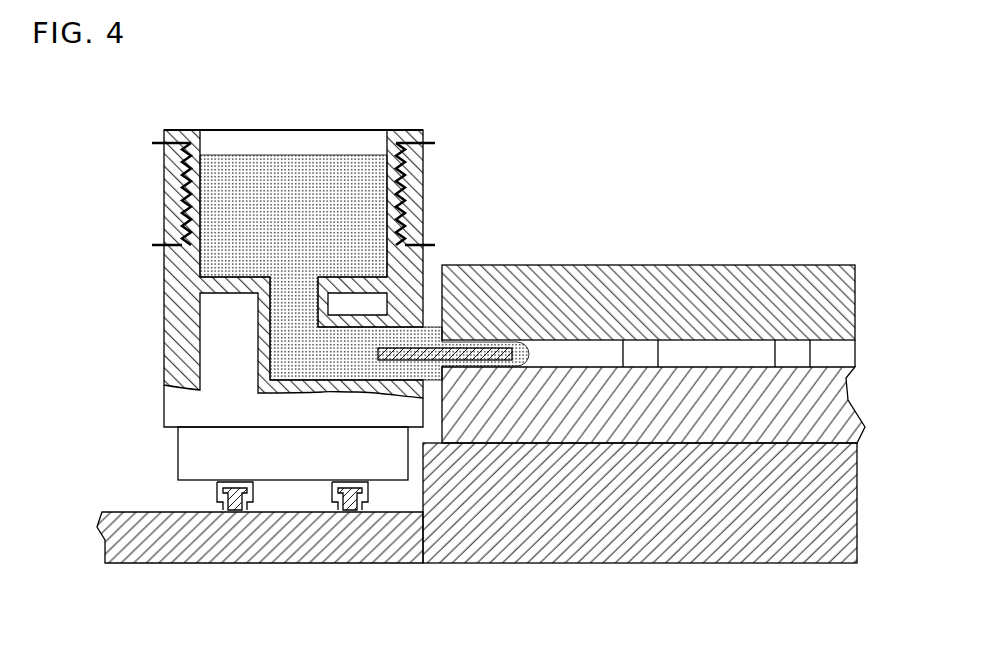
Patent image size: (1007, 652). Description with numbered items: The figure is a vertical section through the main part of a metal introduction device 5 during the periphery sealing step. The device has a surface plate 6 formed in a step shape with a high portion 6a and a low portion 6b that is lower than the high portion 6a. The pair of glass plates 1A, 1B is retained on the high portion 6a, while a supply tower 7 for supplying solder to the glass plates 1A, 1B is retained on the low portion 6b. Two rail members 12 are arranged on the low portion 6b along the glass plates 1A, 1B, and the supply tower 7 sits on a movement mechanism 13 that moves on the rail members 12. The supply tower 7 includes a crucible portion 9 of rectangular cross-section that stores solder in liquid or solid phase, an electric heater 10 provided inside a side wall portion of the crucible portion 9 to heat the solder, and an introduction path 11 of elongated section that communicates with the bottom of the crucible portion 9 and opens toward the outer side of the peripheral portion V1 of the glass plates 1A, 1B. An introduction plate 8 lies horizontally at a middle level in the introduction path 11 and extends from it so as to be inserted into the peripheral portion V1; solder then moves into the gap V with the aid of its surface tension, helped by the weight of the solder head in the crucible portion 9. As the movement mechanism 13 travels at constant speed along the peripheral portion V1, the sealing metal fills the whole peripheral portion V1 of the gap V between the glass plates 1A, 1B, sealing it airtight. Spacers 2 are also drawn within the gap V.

The metal introduction device 5 is at (304, 240).
The supply tower 7 is at (256, 239).
The crucible portion 9 is at (167, 198).
The electric heater 10 is at (269, 187).
The introduction path 11 is at (273, 353).
The introduction plate 8 is at (475, 347).
The movement mechanism 13 is at (161, 488).
The rail members 12 is at (348, 495).
The surface plate 6 is at (461, 532).
The low portion 6b is at (372, 555).
The high portion 6a is at (538, 547).
The glass plate 1A is at (626, 265).
The glass plate 1B is at (727, 420).
The spacers 2 is at (782, 347).
The gap V is at (827, 343).
The peripheral portion V1 is at (523, 238).